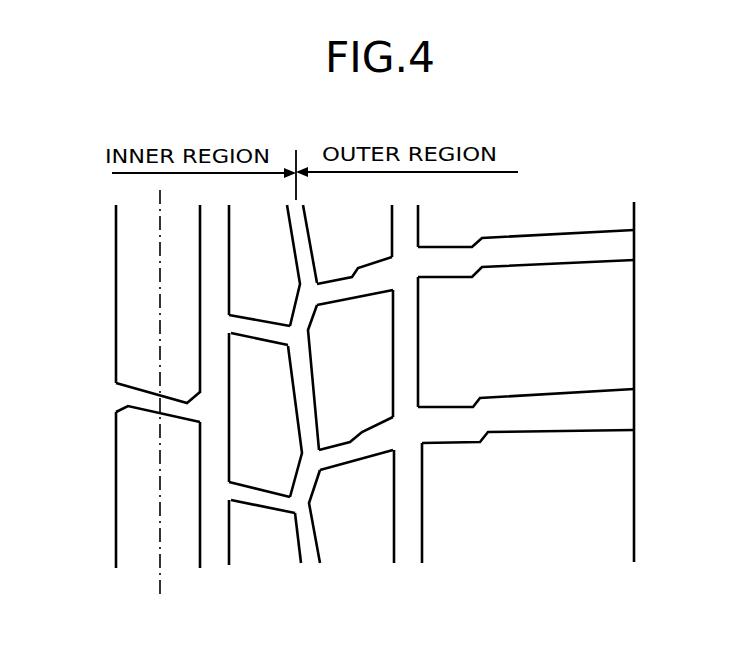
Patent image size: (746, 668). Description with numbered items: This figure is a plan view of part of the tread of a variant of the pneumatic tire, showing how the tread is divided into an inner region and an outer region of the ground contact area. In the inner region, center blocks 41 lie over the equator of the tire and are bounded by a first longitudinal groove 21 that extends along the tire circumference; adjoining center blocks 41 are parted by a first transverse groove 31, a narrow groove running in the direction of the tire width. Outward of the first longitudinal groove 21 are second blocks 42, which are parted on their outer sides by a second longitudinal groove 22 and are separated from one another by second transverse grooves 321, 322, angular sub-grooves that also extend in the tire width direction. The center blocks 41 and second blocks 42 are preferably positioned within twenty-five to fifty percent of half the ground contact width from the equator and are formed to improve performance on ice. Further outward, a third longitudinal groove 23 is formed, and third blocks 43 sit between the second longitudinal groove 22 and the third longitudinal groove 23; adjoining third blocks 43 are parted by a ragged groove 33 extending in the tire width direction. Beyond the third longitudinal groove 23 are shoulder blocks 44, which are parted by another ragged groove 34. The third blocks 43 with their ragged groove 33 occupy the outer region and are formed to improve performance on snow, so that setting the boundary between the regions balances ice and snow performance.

The first longitudinal groove 21 is at (219, 563).
The second longitudinal groove 22 is at (308, 565).
The third longitudinal groove 23 is at (408, 565).
The first transverse groove 31 is at (144, 398).
The second transverse groove 321 is at (238, 327).
The second transverse groove 322 is at (238, 494).
The ragged groove 33 is at (370, 282).
The ragged groove 34 is at (623, 242).
The center block 41 is at (115, 285).
The second block 42 is at (228, 236).
The third block 43 is at (394, 319).
The shoulder block 44 is at (620, 277).